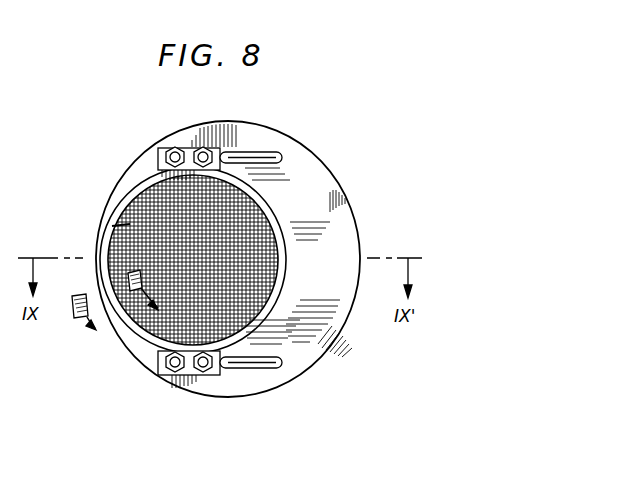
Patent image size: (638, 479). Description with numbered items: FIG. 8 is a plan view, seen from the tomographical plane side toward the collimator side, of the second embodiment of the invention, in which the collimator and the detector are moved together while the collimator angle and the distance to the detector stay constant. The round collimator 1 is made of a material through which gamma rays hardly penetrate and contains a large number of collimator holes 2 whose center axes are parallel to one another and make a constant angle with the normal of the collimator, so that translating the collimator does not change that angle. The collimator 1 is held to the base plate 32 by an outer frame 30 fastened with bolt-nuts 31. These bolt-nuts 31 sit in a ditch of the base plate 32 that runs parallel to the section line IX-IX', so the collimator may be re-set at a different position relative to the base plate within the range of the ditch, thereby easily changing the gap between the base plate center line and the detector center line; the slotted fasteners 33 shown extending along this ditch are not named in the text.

The collimator 1 is at (127, 205).
The collimator holes 2 is at (112, 228).
The outer frame 30 is at (140, 183).
The bolt-nuts 31 is at (200, 146).
The base plate 32 is at (312, 153).
The slotted bolt 33 is at (262, 158).